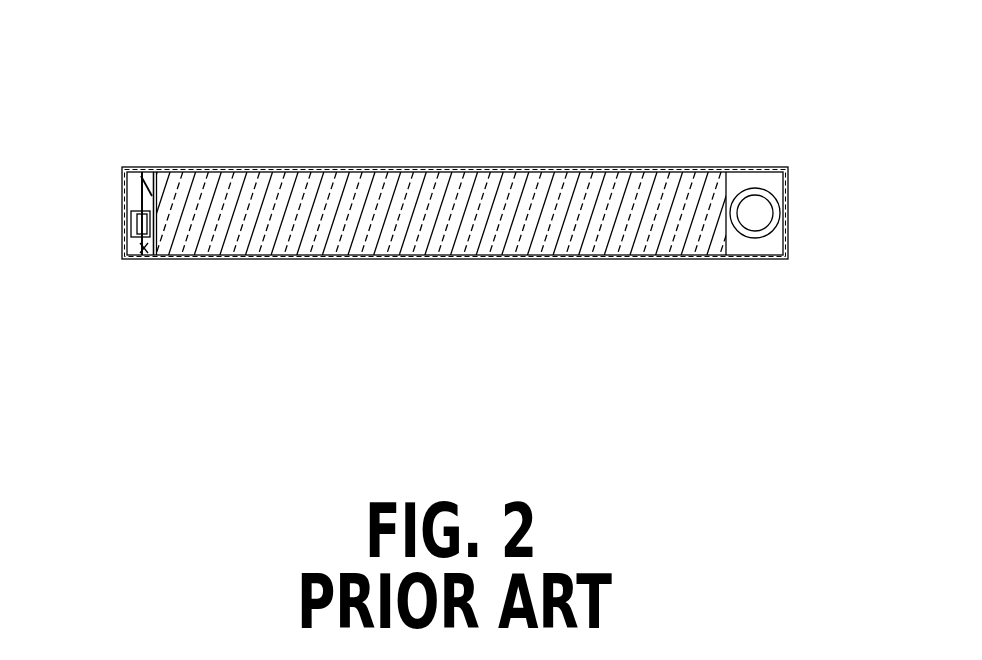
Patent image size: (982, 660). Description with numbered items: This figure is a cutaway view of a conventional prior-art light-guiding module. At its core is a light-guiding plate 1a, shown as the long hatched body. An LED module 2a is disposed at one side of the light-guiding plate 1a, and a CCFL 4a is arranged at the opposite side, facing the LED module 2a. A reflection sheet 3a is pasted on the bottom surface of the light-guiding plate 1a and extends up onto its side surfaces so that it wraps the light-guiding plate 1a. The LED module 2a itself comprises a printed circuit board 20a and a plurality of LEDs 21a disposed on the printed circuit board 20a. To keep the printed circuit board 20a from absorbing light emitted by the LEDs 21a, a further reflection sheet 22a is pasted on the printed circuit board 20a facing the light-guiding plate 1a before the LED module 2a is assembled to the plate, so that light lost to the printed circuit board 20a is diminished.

The light-guiding plate 1a is at (485, 183).
The LED module 2a is at (125, 168).
The printed circuit board 20a is at (147, 250).
The LEDs 21a is at (153, 228).
The reflection sheet 22a is at (158, 181).
The reflection sheet 3a is at (553, 260).
The CCFL 4a is at (765, 211).